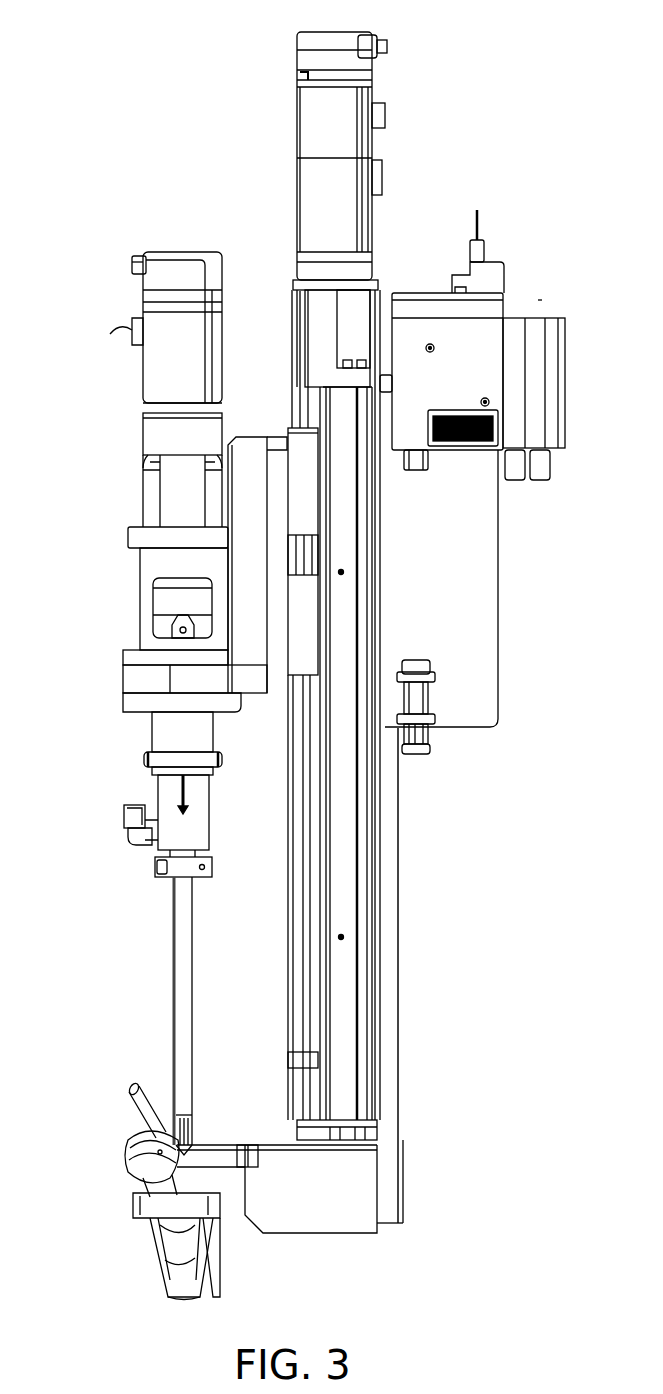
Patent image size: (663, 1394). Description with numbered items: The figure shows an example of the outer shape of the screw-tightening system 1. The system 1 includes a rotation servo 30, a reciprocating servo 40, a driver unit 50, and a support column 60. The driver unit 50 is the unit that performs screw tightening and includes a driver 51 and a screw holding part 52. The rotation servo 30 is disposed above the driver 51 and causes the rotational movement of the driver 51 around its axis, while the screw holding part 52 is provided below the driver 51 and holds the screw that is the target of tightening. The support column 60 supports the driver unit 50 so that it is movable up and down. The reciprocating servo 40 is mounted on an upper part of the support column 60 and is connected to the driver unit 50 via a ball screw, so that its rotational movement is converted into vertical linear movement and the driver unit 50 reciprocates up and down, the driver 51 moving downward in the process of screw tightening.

The screw-tightening system 1 is at (499, 44).
The rotation servo 30 is at (132, 331).
The reciprocating servo 40 is at (297, 190).
The driver unit 50 is at (72, 958).
The driver 51 is at (172, 999).
The screw holding part 52 is at (160, 1248).
The support column 60 is at (358, 955).